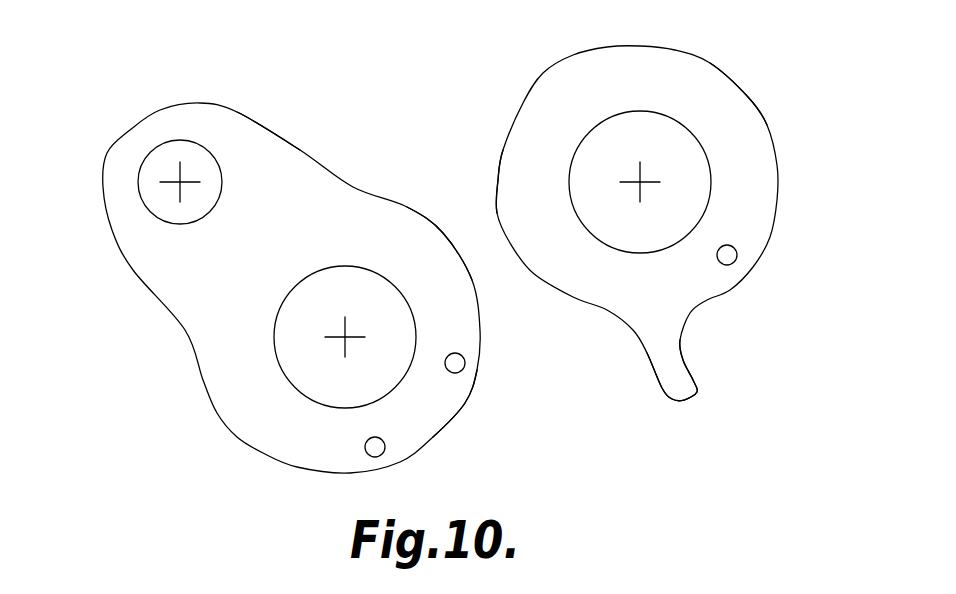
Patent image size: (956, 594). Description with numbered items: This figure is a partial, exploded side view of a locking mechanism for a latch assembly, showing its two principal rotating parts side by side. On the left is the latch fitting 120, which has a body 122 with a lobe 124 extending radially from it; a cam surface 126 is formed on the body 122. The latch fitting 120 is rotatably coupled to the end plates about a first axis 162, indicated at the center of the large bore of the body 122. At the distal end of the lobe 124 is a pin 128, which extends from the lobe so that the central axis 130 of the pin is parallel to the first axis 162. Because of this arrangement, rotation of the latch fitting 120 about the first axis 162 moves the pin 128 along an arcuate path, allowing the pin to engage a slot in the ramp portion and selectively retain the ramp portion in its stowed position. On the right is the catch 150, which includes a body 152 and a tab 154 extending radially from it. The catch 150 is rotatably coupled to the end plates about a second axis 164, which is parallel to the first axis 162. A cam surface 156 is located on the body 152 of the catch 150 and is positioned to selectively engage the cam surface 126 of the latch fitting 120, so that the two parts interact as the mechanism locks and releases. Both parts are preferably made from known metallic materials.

The latch fitting 120 is at (215, 415).
The body 122 is at (465, 405).
The lobe 124 is at (233, 108).
The cam surface 126 is at (447, 233).
The pin 128 is at (170, 140).
The central axis 130 is at (178, 181).
The catch 150 is at (713, 62).
The body 152 is at (748, 97).
The tab 154 is at (697, 388).
The cam surface 156 is at (500, 237).
The first axis 162 is at (345, 337).
The second axis 164 is at (643, 180).